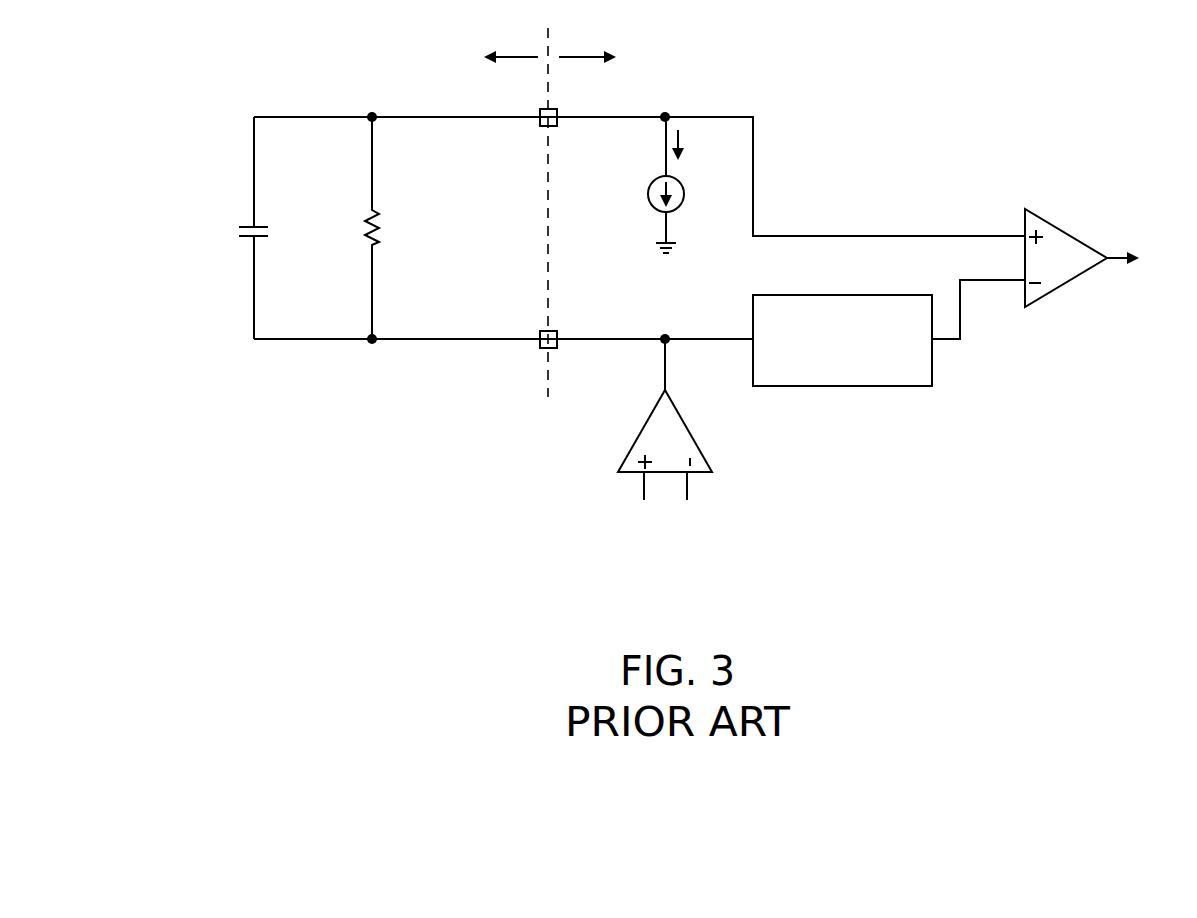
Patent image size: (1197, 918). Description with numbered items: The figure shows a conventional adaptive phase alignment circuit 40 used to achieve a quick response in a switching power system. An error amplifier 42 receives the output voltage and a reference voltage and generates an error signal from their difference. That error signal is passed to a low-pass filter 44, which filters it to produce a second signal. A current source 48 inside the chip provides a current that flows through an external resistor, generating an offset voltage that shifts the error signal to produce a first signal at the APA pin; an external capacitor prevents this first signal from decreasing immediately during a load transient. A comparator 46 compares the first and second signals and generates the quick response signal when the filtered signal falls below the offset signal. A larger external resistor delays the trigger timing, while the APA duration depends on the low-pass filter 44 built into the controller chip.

The APA circuit 40 is at (1121, 76).
The error amplifier 42 is at (640, 430).
The low-pass filter 44 is at (843, 386).
The comparator 46 is at (1065, 232).
The current source 48 is at (648, 197).